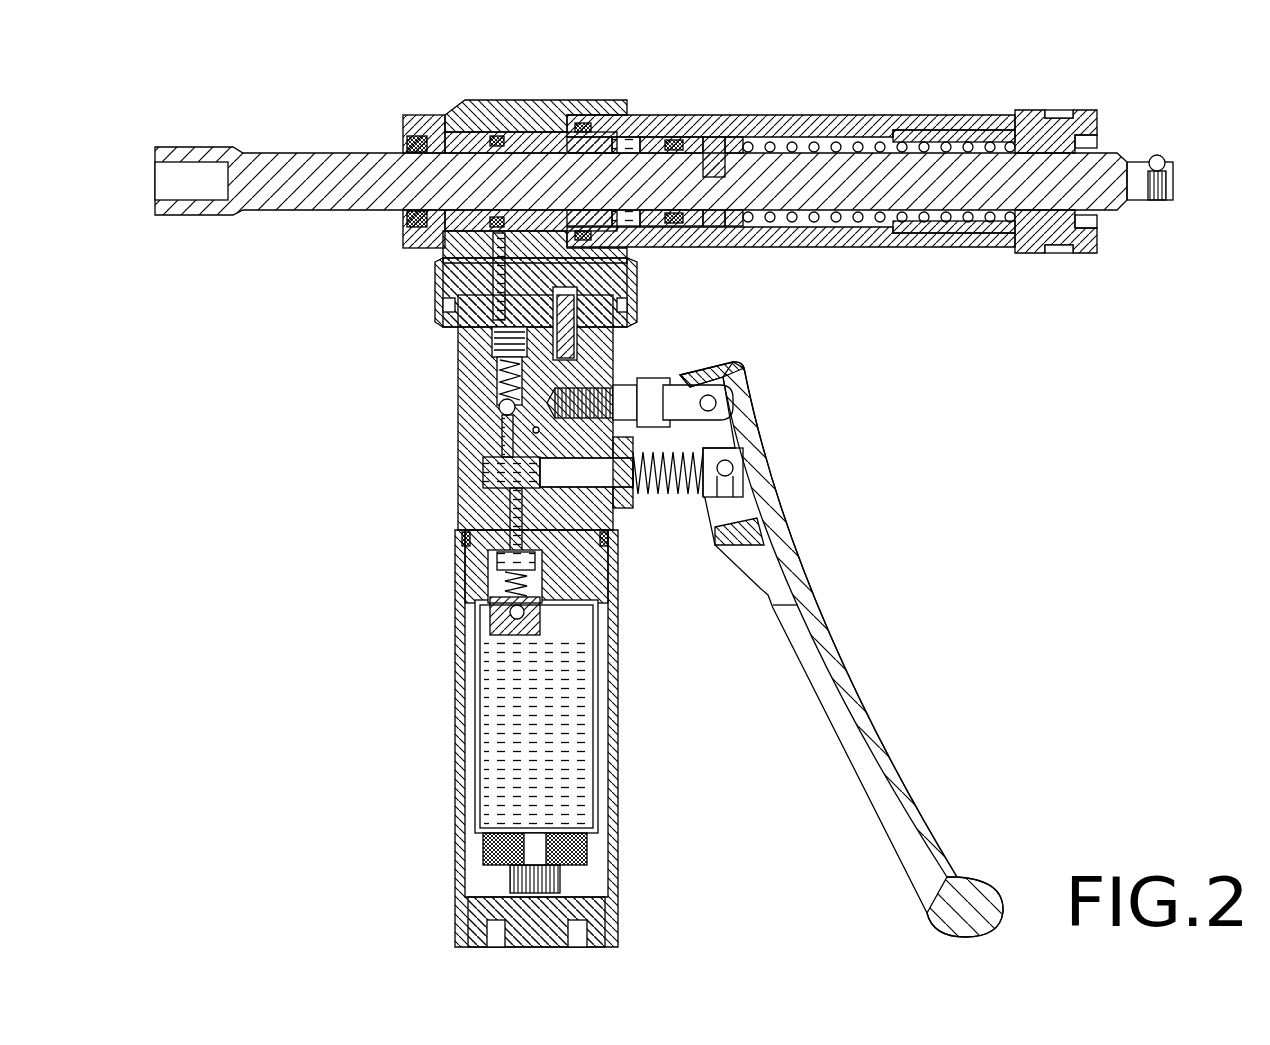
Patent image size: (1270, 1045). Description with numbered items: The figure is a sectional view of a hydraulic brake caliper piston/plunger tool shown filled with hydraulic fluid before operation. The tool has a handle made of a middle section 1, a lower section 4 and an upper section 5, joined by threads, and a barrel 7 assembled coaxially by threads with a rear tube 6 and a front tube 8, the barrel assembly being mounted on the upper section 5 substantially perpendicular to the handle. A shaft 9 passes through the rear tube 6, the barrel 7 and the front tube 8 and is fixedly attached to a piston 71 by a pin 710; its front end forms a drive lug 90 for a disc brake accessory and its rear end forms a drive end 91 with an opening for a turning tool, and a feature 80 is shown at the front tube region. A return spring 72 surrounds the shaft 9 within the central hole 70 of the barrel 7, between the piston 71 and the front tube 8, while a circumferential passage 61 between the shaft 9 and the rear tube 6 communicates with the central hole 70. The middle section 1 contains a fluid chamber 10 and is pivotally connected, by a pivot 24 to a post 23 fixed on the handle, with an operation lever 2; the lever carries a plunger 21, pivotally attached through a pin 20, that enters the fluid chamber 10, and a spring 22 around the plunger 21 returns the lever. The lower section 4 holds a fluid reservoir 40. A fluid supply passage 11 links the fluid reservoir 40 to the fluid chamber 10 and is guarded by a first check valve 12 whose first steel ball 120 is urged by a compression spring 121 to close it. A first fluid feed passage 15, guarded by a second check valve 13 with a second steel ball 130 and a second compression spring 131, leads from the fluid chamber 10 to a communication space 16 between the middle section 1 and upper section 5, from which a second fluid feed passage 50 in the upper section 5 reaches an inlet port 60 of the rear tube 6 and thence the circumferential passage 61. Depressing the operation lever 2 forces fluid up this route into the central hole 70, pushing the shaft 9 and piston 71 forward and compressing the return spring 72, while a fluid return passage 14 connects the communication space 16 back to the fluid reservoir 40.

The middle section 1 is at (460, 470).
The operation lever 2 is at (885, 713).
The lower section 4 is at (462, 835).
The upper section 5 is at (530, 100).
The rear tube 6 is at (406, 135).
The barrel 7 is at (816, 115).
The front tube 8 is at (1026, 110).
The shaft 9 is at (300, 150).
The fluid chamber 10 is at (490, 476).
The fluid supply passage 11 is at (515, 508).
The first check valve 12 is at (492, 624).
The second check valve 13 is at (488, 343).
The fluid return passage 14 is at (585, 365).
The first fluid feed passage 15 is at (500, 428).
The communication space 16 is at (505, 262).
The pin 20 is at (743, 468).
The plunger 21 is at (620, 490).
The spring 22 is at (697, 478).
The post 23 is at (652, 390).
The pivot 24 is at (716, 402).
The fluid reservoir 40 is at (478, 740).
The second fluid feed passage 50 is at (440, 272).
The inlet port 60 is at (498, 140).
The circumferential passage 61 is at (548, 132).
The central hole 70 is at (637, 142).
The piston 71 is at (675, 142).
The return spring 72 is at (853, 143).
The notch 80 is at (1060, 110).
The drive lug 90 is at (1135, 200).
The drive end 91 is at (190, 216).
The first steel ball 120 is at (498, 600).
The compression spring 121 is at (495, 583).
The second steel ball 130 is at (500, 408).
The second compression spring 131 is at (498, 388).
The pin 710 is at (716, 142).